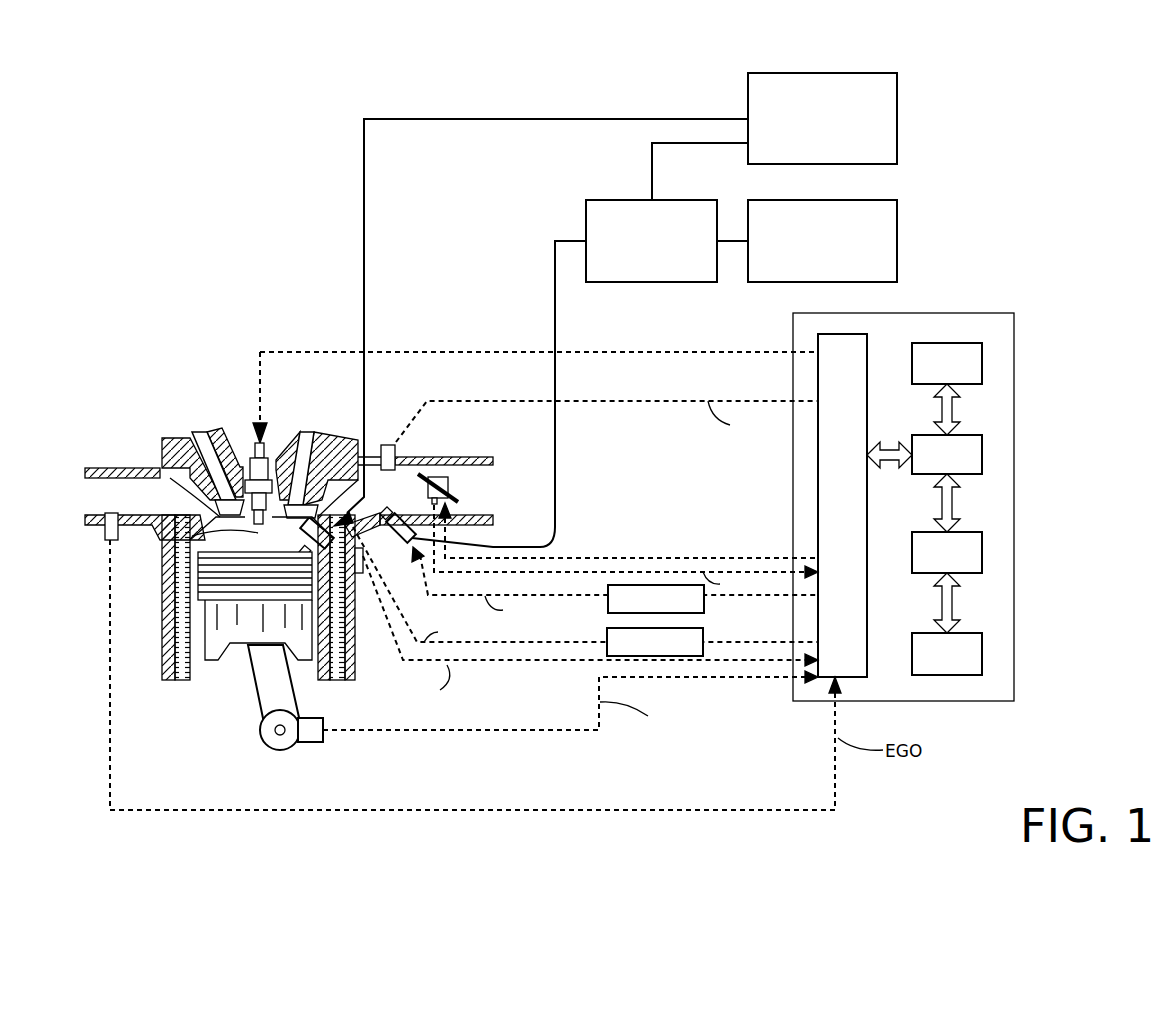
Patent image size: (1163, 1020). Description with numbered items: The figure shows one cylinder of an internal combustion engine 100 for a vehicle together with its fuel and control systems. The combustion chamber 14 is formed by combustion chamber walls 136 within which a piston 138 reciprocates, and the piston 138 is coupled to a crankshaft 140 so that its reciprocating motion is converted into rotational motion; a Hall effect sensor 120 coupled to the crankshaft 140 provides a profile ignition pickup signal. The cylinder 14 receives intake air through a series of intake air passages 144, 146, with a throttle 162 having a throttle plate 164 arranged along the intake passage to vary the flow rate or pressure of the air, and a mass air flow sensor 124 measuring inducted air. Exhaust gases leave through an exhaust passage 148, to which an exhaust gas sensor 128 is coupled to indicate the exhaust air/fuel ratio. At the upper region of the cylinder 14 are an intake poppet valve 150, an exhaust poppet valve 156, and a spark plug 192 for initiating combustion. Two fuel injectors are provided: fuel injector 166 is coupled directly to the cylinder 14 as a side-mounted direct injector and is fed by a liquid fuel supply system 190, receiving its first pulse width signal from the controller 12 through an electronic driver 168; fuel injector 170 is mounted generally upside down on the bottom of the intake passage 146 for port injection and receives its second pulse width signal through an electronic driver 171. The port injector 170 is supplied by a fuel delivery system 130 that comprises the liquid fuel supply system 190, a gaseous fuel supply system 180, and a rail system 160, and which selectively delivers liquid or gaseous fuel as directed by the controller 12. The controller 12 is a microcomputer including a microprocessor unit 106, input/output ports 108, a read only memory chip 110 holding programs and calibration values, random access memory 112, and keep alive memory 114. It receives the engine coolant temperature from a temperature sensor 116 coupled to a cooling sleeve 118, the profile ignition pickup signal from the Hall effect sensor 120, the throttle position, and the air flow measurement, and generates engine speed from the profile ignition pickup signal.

The internal combustion engine 100 is at (132, 378).
The controller 12 is at (1012, 313).
The combustion chamber 14 is at (225, 552).
The microprocessor unit 106 is at (982, 450).
The input/output ports 108 is at (868, 343).
The read only memory chip 110 is at (982, 362).
The random access memory 112 is at (982, 552).
The keep alive memory 114 is at (982, 653).
The temperature sensor 116 is at (360, 575).
The cooling sleeve 118 is at (340, 665).
The Hall effect sensor 120 is at (318, 745).
The mass air flow sensor 124 is at (384, 445).
The exhaust gas sensor 128 is at (108, 540).
The fuel delivery system 130 is at (930, 170).
The combustion chamber walls 136 is at (182, 684).
The piston 138 is at (243, 635).
The crankshaft 140 is at (270, 750).
The intake air passage 144 is at (497, 497).
The intake air passage 146 is at (400, 497).
The exhaust passage 148 is at (152, 507).
The intake poppet valve 150 is at (262, 468).
The exhaust poppet valve 156 is at (222, 508).
The rail system 160 is at (672, 200).
The throttle 162 is at (440, 476).
The throttle plate 164 is at (465, 488).
The fuel injector 166 is at (523, 338).
The electronic driver 168 is at (607, 628).
The fuel injector 170 is at (412, 548).
The electronic driver 171 is at (704, 612).
The gaseous fuel supply system 180 is at (820, 200).
The liquid fuel supply system 190 is at (822, 73).
The spark plug 192 is at (521, 438).